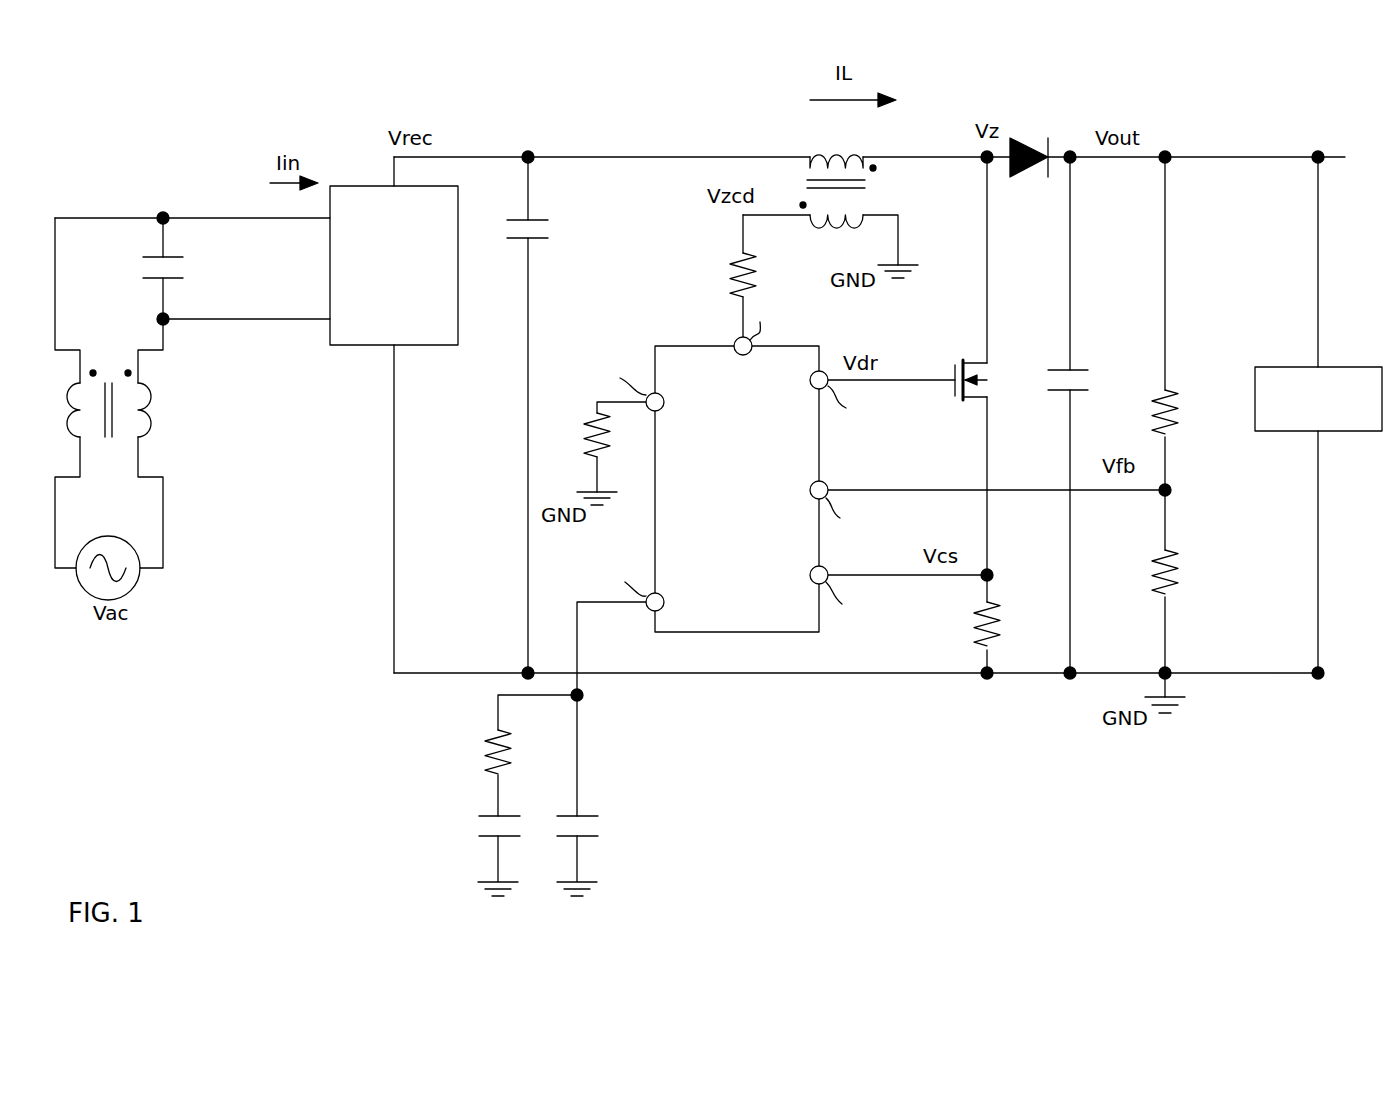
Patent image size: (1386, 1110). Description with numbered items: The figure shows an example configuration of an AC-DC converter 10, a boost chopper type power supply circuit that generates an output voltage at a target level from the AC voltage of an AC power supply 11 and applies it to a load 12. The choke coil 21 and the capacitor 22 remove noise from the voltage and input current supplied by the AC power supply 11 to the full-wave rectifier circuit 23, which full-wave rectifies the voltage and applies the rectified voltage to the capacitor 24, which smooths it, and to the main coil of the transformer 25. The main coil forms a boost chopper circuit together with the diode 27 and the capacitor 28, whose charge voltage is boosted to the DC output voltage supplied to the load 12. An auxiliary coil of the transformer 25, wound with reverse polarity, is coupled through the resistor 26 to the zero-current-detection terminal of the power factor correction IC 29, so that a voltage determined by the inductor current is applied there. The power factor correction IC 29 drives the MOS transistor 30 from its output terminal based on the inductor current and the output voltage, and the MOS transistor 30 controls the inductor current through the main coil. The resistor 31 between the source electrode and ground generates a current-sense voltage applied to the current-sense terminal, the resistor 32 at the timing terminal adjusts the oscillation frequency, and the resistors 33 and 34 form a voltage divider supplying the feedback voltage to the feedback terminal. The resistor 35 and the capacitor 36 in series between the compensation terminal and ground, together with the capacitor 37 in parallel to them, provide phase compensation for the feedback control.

The AC-DC converter 10 is at (948, 52).
The AC power supply 11 is at (131, 591).
The load 12 is at (1340, 367).
The choke coil 21 is at (175, 408).
The capacitor 22 is at (183, 278).
The full-wave rectifier circuit 23 is at (333, 186).
The capacitor 24 is at (517, 240).
The transformer 25 is at (796, 118).
The resistor 26 is at (730, 283).
The diode 27 is at (1014, 140).
The capacitor 28 is at (1082, 370).
The power factor correction IC 29 is at (819, 346).
The MOS transistor 30 is at (977, 362).
The resistor 31 is at (995, 612).
The resistor 32 is at (605, 448).
The resistor 33 is at (1175, 402).
The resistor 34 is at (1172, 562).
The resistor 35 is at (490, 735).
The capacitor 36 is at (480, 815).
The capacitor 37 is at (590, 815).